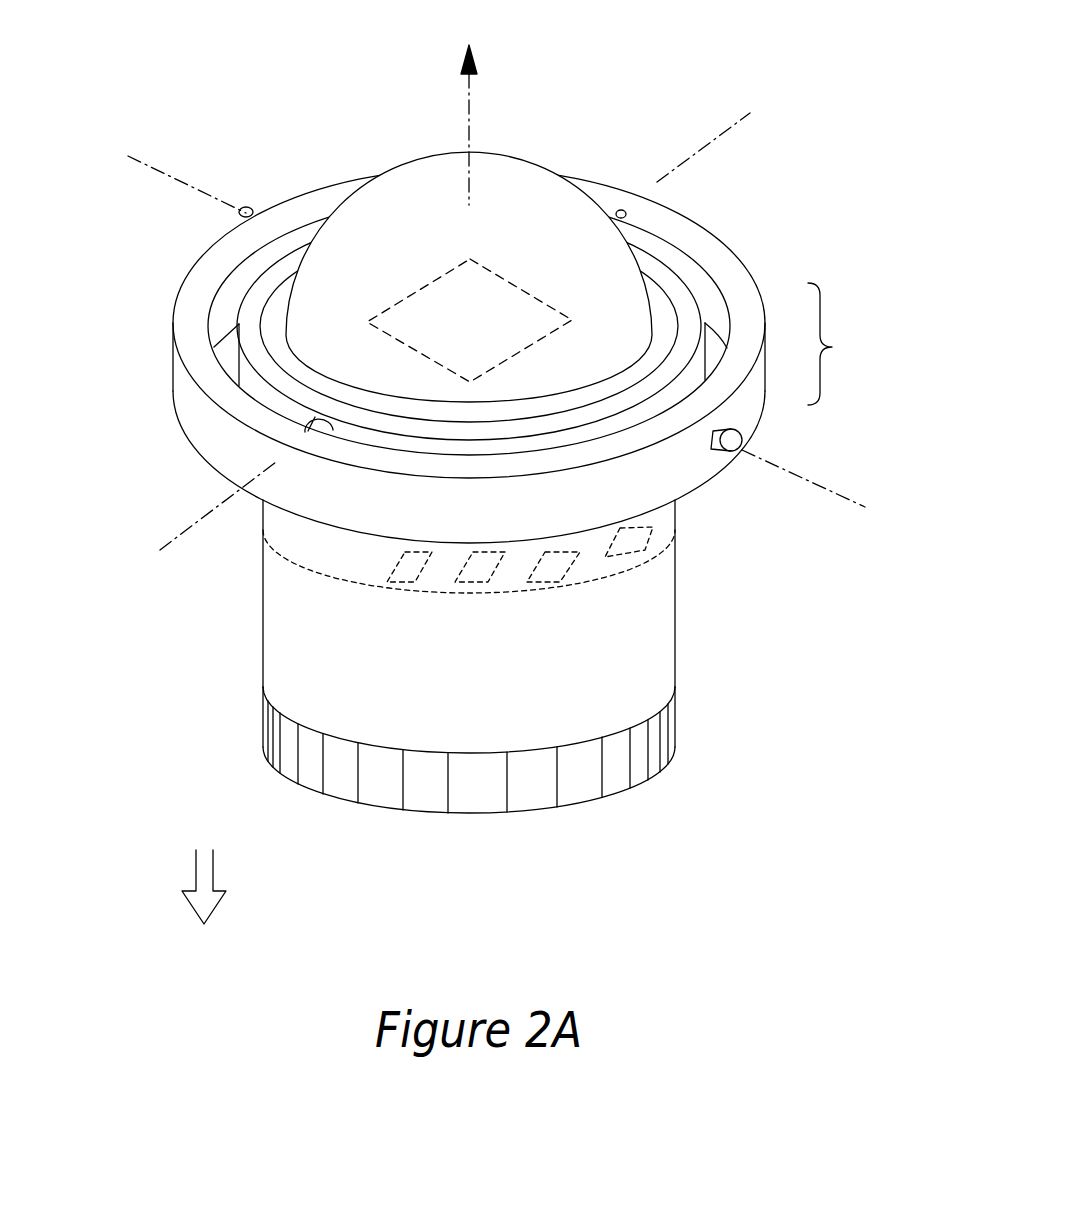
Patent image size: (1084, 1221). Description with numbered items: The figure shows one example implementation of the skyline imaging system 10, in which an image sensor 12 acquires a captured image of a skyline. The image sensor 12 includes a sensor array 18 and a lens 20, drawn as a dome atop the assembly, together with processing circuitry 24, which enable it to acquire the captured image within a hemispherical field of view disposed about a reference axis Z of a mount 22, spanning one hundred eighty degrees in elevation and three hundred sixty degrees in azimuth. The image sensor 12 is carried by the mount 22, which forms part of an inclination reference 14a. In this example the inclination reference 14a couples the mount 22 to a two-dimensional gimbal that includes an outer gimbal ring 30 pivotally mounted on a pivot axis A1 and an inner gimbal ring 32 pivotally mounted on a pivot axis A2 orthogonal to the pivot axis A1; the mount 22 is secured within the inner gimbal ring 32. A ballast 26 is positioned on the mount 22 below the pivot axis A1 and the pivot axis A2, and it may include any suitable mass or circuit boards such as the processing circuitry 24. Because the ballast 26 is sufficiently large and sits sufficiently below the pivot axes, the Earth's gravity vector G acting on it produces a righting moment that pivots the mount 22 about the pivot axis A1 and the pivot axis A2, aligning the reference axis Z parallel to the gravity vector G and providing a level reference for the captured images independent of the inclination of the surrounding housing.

The skyline imaging system 10 is at (768, 232).
The image sensor 12 is at (348, 196).
The inclination reference 14a is at (832, 347).
The sensor array 18 is at (515, 287).
The lens 20 is at (421, 174).
The mount 22 is at (650, 350).
The processing circuitry 24 is at (662, 546).
The ballast 26 is at (668, 716).
The outer gimbal ring 30 is at (197, 355).
The inner gimbal ring 32 is at (252, 300).
The reference axis Z is at (473, 83).
The pivot axis A1 is at (827, 487).
The pivot axis A2 is at (160, 555).
The Earth's gravity vector G is at (203, 863).